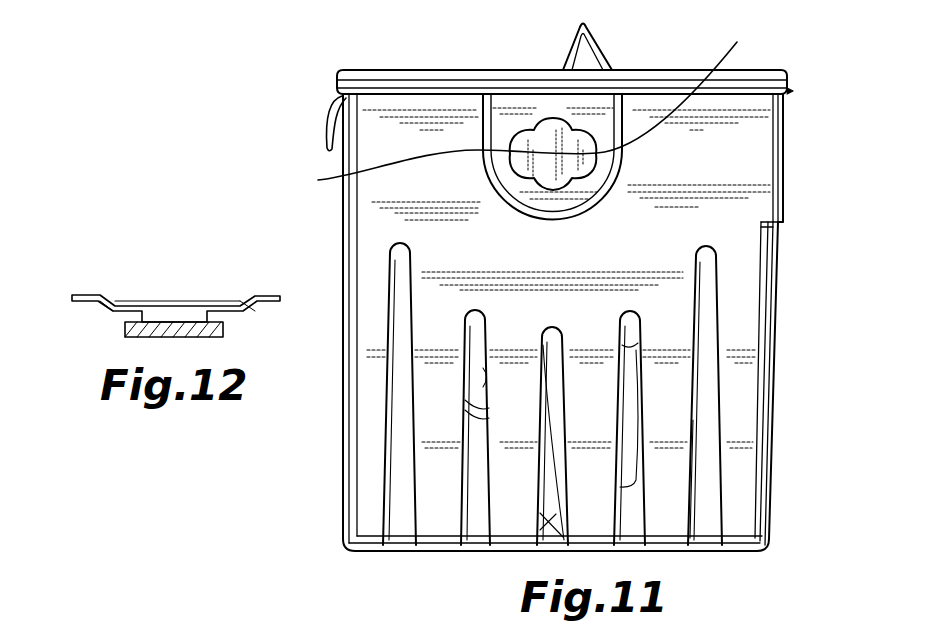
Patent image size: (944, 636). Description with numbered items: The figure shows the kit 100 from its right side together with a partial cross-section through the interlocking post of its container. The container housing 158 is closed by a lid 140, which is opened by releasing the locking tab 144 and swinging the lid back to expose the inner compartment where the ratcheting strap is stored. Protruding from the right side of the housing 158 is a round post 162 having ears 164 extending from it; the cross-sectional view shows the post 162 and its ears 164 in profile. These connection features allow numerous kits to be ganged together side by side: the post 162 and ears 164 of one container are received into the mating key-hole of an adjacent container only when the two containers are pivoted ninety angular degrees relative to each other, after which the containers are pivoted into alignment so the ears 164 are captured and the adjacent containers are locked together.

In FIG. 11, the kit 100 is at (502, 322).
In FIG. 11, the lid 140 is at (680, 70).
In FIG. 11, the locking tab 144 is at (328, 132).
In FIG. 11, the container housing 158 is at (349, 446).
In FIG. 11, the round post 162 is at (550, 122).
In FIG. 12, the round post 162 is at (207, 319).
In FIG. 11, the ears 164 is at (529, 109).
In FIG. 12, the ears 164 is at (223, 337).